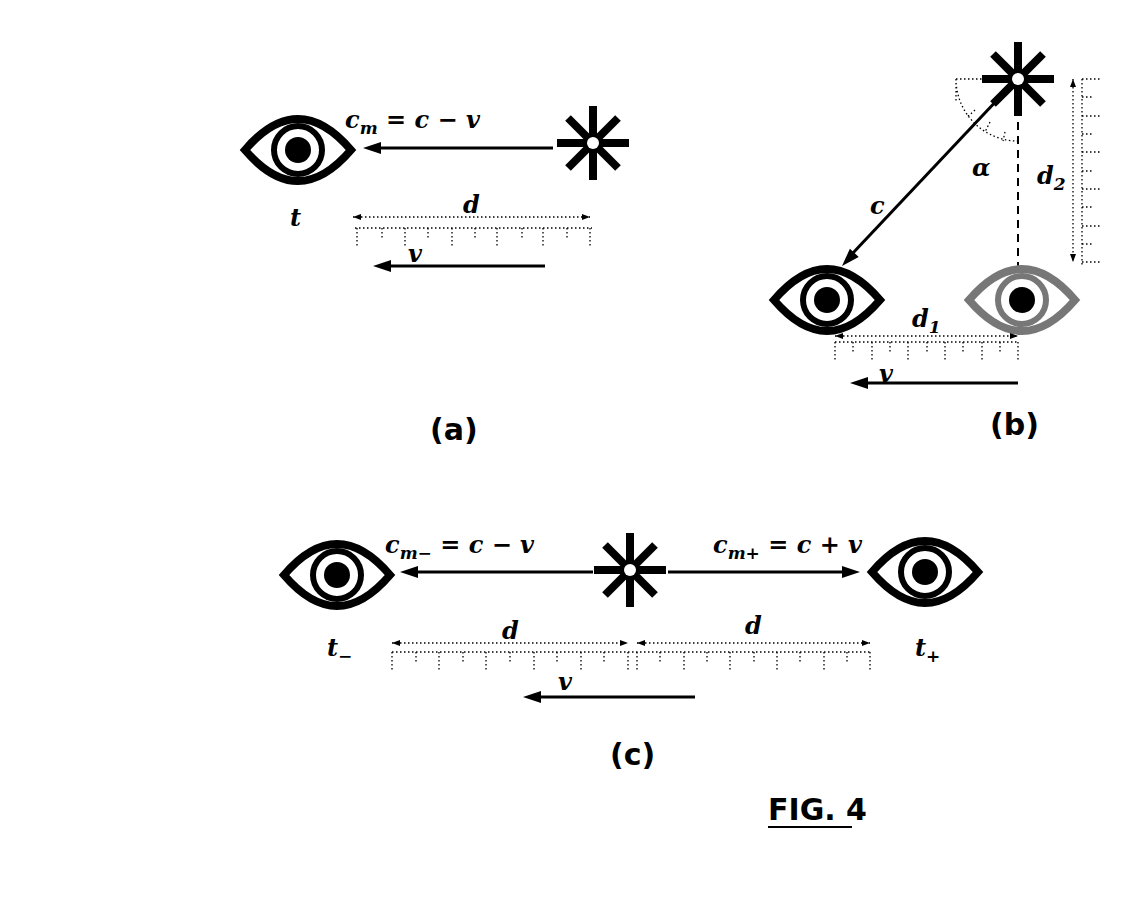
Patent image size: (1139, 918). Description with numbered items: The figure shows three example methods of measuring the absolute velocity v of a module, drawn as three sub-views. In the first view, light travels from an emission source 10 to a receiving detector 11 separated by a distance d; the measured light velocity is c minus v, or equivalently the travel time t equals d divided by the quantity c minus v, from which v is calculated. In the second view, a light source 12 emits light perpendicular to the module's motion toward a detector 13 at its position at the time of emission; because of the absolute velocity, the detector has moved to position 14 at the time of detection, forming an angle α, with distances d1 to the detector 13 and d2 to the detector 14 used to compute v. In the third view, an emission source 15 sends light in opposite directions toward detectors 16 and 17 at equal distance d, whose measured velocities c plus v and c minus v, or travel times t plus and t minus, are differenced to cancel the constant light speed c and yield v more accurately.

The emission source 10 is at (628, 148).
The receiving detector 11 is at (250, 153).
The light source 12 is at (983, 82).
The detector 13 is at (1073, 302).
The detector at position at time of detection 14 is at (775, 300).
The emission source 15 is at (628, 540).
The detector 16 is at (980, 572).
The detector 17 is at (283, 577).